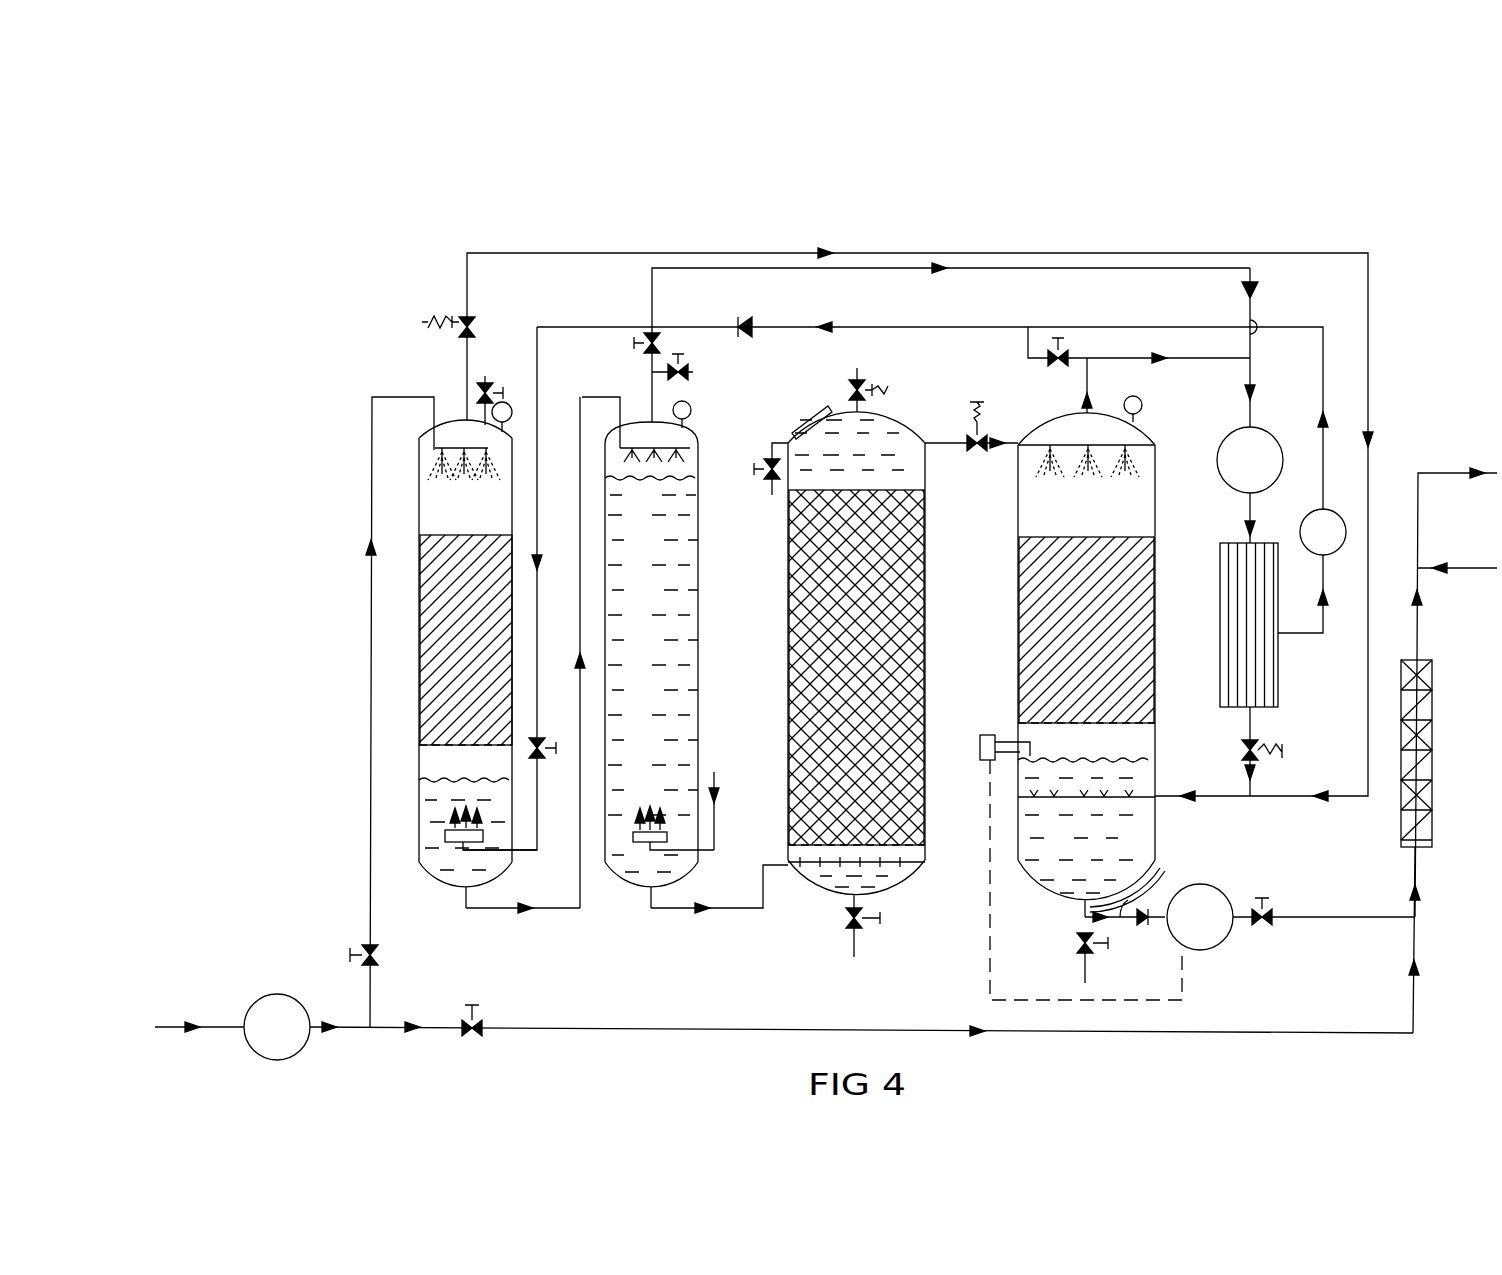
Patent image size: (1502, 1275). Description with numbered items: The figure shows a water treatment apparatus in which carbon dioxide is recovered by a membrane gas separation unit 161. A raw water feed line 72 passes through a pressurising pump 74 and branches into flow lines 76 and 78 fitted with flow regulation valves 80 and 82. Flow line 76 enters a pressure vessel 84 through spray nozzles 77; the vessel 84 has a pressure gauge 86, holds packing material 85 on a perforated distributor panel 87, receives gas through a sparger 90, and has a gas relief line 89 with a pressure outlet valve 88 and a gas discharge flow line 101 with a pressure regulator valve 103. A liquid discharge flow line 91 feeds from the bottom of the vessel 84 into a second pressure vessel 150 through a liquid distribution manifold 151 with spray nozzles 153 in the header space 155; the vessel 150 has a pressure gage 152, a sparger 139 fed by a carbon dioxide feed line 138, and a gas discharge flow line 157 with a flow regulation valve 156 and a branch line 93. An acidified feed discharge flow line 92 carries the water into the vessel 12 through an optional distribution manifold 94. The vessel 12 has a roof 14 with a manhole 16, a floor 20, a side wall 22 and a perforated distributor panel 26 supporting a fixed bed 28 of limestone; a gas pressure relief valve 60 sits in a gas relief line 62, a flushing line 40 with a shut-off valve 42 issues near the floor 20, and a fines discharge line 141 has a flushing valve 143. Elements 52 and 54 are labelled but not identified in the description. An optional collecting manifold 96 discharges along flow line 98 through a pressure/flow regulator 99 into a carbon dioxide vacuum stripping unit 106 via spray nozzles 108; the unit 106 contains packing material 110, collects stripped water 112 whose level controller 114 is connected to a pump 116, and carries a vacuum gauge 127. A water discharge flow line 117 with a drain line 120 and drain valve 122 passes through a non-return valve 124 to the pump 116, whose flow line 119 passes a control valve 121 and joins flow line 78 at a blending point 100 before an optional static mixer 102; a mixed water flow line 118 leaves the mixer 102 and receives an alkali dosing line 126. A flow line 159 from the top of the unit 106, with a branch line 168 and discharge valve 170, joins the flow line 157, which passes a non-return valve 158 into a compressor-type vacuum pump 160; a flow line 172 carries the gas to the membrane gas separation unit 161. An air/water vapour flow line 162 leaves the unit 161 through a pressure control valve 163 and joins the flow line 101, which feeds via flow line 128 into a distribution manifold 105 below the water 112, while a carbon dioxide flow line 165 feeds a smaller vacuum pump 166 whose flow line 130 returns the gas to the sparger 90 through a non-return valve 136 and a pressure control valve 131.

The vessel 12 is at (927, 652).
The roof 14 is at (908, 430).
The manhole 16 is at (826, 406).
The floor 20 is at (895, 878).
The side wall 22 is at (795, 720).
The perforated distributor panel 26 is at (922, 850).
The fixed bed 28 is at (810, 650).
The flushing line 40 is at (854, 940).
The shut-off valve 42 is at (882, 920).
The inlet line 52 is at (790, 865).
The liquid 54 is at (895, 490).
The gas pressure relief valve 60 is at (868, 386).
The gas relief line 62 is at (858, 370).
The raw water feed line 72 is at (190, 1030).
The pressurising pump 74 is at (283, 1000).
The flow line 76 is at (368, 660).
The spray nozzles 77 is at (450, 448).
The flow line 78 is at (596, 1032).
The flow regulation valve 80 is at (380, 952).
The flow regulation valve 82 is at (472, 1038).
The pressure vessel 84 is at (420, 645).
The packing material 85 is at (442, 683).
The pressure gauge 86 is at (512, 405).
The perforated distributor panel 87 is at (448, 745).
The pressure outlet valve 88 is at (487, 380).
The gas relief line 89 is at (467, 408).
The sparger 90 is at (485, 833).
The liquid discharge flow line 91 is at (560, 908).
The acidified feed discharge flow line 92 is at (690, 909).
The branch line 93 is at (694, 372).
The distribution manifold 94 is at (903, 862).
The collecting manifold 96 is at (868, 445).
The flow line 98 is at (927, 447).
The pressure/flow regulator 99 is at (977, 440).
The blending point 100 is at (1415, 945).
The gas discharge flow line 101 is at (467, 365).
The static mixer 102 is at (1422, 772).
The pressure regulator valve 103 is at (472, 330).
The distribution manifold 105 is at (1120, 798).
The carbon dioxide vacuum stripping unit 106 is at (1015, 592).
The spray nozzles 108 is at (1105, 452).
The packing material 110 is at (1048, 665).
The water 112 is at (1028, 820).
The level controller 114 is at (987, 735).
The pump 116 is at (1198, 945).
The water discharge flow line 117 is at (1160, 870).
The mixed water flow line 118 is at (1417, 640).
The flow line 119 is at (1240, 925).
The drain line 120 is at (1085, 917).
The control valve 121 is at (1262, 898).
The drain valve 122 is at (1078, 944).
The non-return valve 124 is at (1138, 926).
The alkali dosing line 126 is at (1483, 570).
The vacuum gauge 127 is at (1141, 400).
The flow line 128 is at (1238, 800).
The flow line 130 is at (592, 325).
The pressure control valve 131 is at (540, 738).
The non-return valve 136 is at (752, 316).
The carbon dioxide feed line 138 is at (714, 790).
The sparger 139 is at (660, 830).
The fines discharge line 141 is at (775, 440).
The flushing valve 143 is at (770, 478).
The pressure vessel 150 is at (700, 650).
The liquid distribution manifold 151 is at (662, 501).
The pressure gage 152 is at (691, 408).
The spray nozzles 153 is at (672, 440).
The header space 155 is at (628, 468).
The flow regulation valve 156 is at (656, 340).
The gas discharge flow line 157 is at (722, 253).
The non-return valve 158 is at (1257, 292).
The flow line 159 is at (1213, 358).
The compressor-type vacuum pump 160 is at (1228, 468).
The membrane gas separation unit 161 is at (1270, 587).
The air/water vapour flow line 162 is at (1252, 724).
The pressure control valve 163 is at (1260, 758).
The CO2 flow line 165 is at (1295, 635).
The compressor-type vacuum pump 166 is at (1310, 530).
The branch line 168 is at (1040, 355).
The discharge valve 170 is at (1060, 338).
The flow line 172 is at (1245, 512).